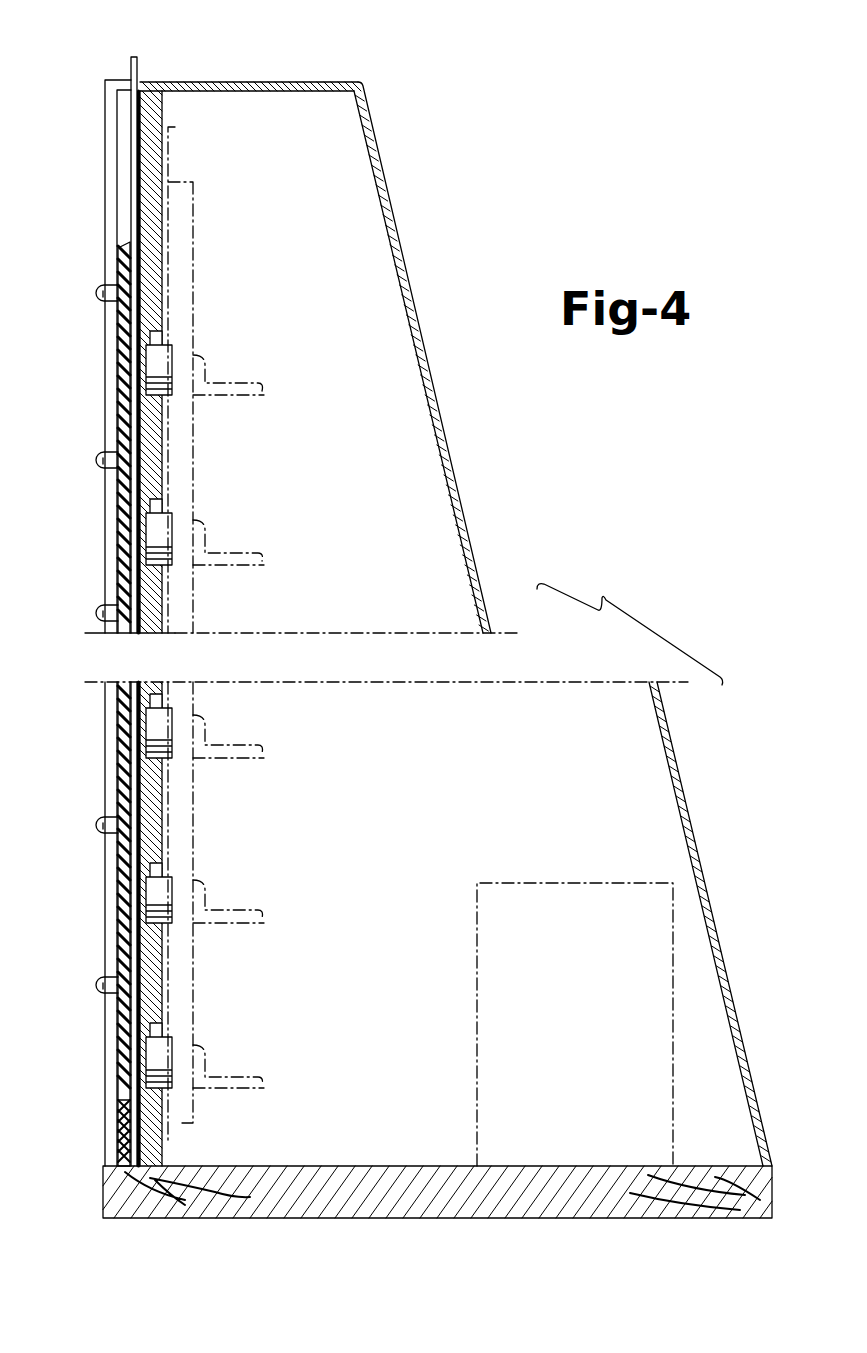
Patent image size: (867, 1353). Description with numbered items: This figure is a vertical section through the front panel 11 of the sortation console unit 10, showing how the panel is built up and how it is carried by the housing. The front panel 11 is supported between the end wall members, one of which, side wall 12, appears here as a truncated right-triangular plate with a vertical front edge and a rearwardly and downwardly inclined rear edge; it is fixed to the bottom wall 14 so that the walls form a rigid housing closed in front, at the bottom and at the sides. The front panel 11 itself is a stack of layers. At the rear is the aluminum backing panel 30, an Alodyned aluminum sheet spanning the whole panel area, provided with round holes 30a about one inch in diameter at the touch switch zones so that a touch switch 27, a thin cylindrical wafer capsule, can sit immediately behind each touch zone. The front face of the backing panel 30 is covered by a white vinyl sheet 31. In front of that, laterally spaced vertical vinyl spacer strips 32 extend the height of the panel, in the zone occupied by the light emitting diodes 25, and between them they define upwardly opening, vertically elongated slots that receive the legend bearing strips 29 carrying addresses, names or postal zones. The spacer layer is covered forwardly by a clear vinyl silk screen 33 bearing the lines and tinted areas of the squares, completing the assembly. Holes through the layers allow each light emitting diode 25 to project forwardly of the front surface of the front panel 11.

The sortation console unit 10 is at (395, 103).
The front panel 11 is at (117, 250).
The side wall 12 is at (427, 488).
The bottom wall 14 is at (366, 1222).
The light emitting diode 25 is at (97, 294).
The touch switch 27 is at (163, 356).
The legend bearing strip 29 is at (138, 66).
The rear aluminum backing panel 30 is at (162, 255).
The round holes 30a is at (165, 404).
The white vinyl sheet 31 is at (145, 464).
The vinyl spacer strips 32 is at (130, 1140).
The clear vinyl silk screen 33 is at (118, 1015).